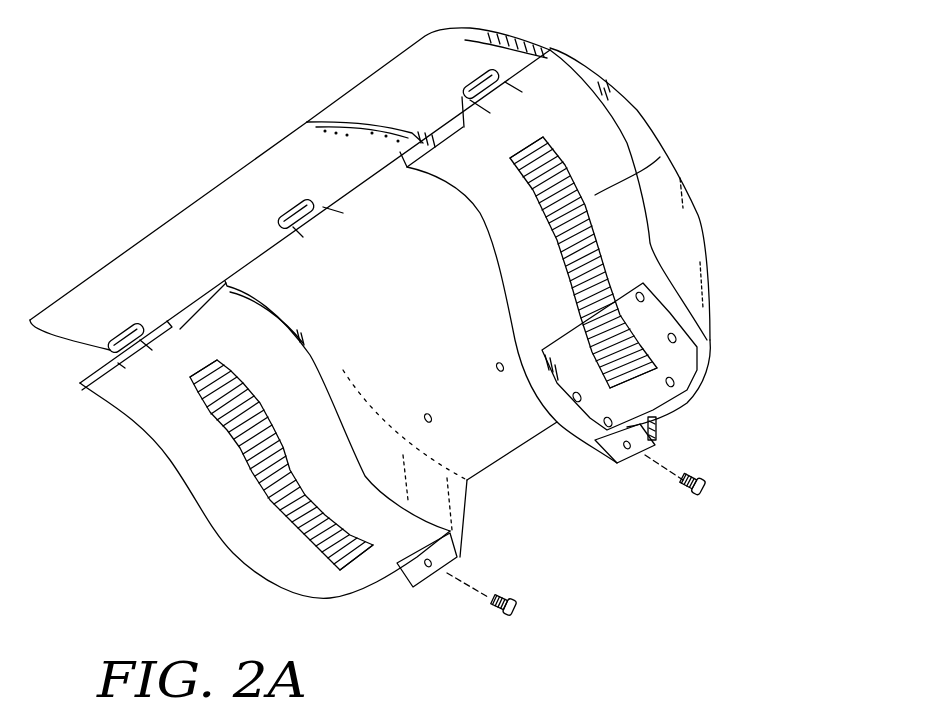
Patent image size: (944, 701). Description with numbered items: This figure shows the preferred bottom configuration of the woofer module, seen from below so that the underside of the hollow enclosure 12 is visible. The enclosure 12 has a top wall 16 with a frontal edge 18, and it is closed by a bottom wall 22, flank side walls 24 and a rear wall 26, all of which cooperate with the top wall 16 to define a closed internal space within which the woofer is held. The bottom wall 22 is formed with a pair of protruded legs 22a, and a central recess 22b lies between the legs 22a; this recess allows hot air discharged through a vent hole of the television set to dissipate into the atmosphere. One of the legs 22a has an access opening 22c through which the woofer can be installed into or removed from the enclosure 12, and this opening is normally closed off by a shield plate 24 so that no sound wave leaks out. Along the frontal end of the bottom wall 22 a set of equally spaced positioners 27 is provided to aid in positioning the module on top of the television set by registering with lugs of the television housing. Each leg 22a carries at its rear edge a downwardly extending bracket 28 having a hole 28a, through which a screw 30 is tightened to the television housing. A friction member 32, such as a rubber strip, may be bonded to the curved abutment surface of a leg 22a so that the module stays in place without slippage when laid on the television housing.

The hollow enclosure 12 is at (119, 241).
The top wall 16 is at (623, 90).
The frontal edge 18 is at (533, 42).
The bottom wall 22 is at (641, 243).
The protruded legs 22a is at (315, 405).
The central recess 22b is at (445, 341).
The access opening 22c is at (545, 410).
The flank side walls 24 is at (700, 257).
The rear wall 26 is at (710, 370).
The positioners 27 is at (132, 327).
The bracket 28 is at (422, 573).
The hole 28a is at (653, 440).
The screw 30 is at (505, 620).
The friction member 32 is at (660, 155).